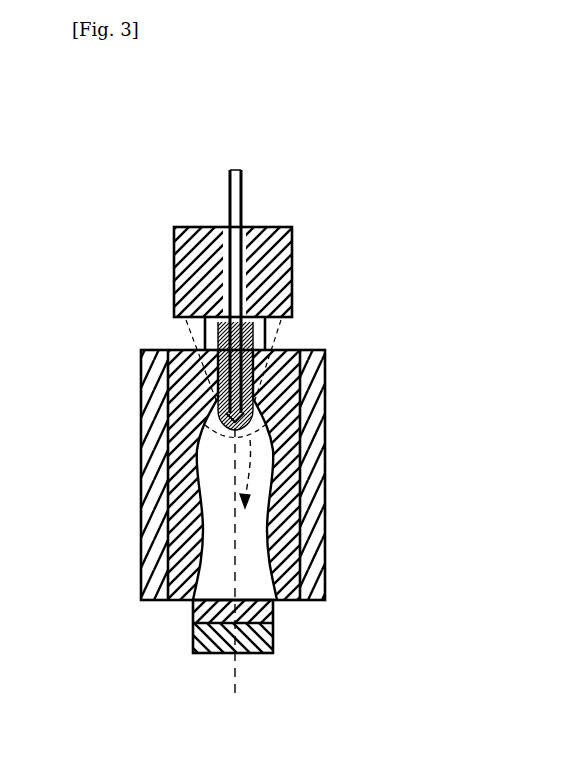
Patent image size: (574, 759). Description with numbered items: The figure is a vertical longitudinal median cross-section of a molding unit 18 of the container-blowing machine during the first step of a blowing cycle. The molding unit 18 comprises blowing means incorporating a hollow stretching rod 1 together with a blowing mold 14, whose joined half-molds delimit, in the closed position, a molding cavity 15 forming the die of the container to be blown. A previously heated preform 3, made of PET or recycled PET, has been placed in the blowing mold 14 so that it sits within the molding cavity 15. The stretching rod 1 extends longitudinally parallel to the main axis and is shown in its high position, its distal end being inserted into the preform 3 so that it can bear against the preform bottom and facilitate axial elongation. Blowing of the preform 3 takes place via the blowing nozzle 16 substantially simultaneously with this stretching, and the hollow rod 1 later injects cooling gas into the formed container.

The stretching rod 1 is at (242, 197).
The preform 3 is at (224, 424).
The blowing mold 14 is at (184, 612).
The molding cavity 15 is at (262, 441).
The blowing nozzle 16 is at (296, 268).
The molding unit 18 is at (157, 217).